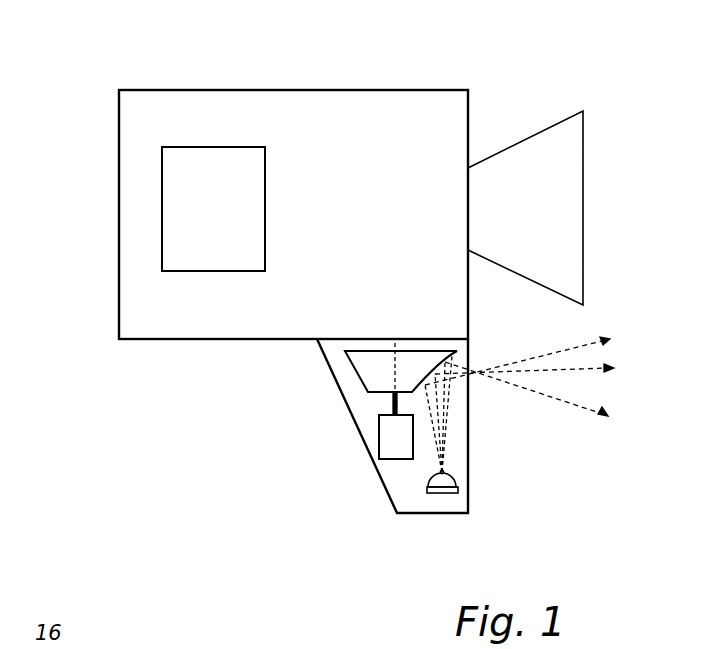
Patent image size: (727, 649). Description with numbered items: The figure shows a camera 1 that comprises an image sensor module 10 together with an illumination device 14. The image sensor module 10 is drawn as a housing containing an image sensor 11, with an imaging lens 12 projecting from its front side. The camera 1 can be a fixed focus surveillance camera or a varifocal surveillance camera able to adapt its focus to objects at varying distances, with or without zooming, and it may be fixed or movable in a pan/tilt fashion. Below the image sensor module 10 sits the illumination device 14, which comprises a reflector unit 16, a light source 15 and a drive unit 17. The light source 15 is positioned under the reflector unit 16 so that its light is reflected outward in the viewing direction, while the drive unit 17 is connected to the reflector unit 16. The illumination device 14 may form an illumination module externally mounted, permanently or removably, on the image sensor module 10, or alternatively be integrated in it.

The camera 1 is at (100, 418).
The image sensor module 10 is at (337, 128).
The image sensor 11 is at (175, 170).
The imaging lens 12 is at (560, 204).
The illumination device 14 is at (343, 503).
The light source 15 is at (457, 484).
The reflector unit 16 is at (382, 382).
The drive unit 17 is at (397, 447).